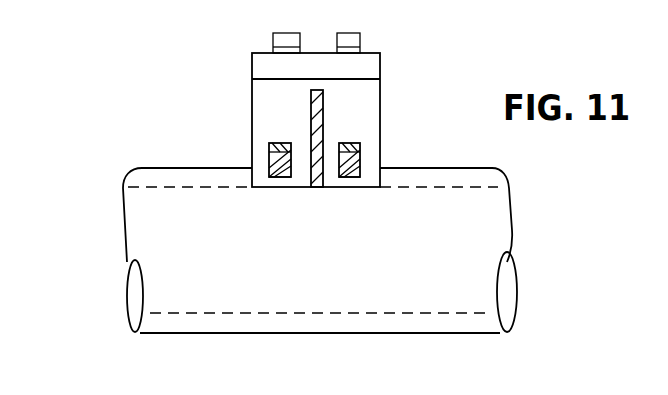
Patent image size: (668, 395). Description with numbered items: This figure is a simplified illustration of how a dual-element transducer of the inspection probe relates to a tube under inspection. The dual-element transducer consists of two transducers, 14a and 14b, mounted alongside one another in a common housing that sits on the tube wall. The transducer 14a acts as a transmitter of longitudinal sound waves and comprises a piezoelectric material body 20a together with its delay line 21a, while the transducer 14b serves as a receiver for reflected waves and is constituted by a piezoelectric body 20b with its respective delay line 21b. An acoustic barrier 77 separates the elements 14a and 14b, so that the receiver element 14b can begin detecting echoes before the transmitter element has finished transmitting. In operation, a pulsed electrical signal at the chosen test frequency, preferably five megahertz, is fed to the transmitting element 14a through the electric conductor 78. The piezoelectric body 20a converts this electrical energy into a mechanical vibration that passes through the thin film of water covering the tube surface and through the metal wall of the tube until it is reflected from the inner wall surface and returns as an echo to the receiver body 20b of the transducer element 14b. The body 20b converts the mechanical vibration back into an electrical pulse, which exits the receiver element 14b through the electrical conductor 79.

The acoustic barrier 77 is at (310, 115).
The electric conductor 78 is at (361, 42).
The electrical conductor 79 is at (273, 39).
The transducer 14a is at (360, 160).
The transducer 14b is at (269, 163).
The piezoelectric material body 20a is at (349, 177).
The piezoelectric body 20b is at (280, 177).
The delay line 21a is at (356, 145).
The delay line 21b is at (272, 145).